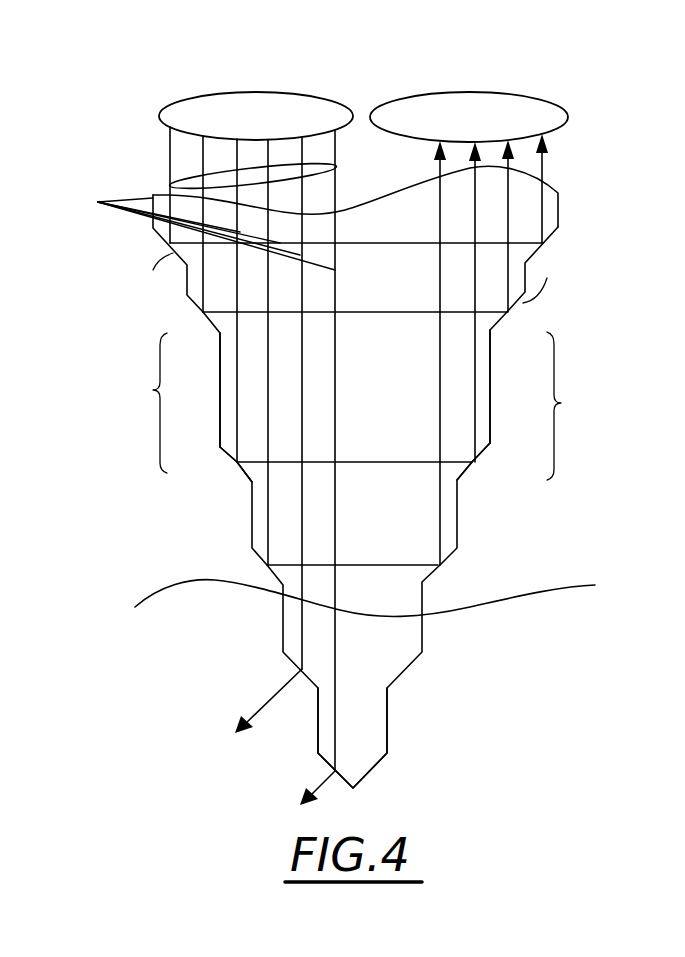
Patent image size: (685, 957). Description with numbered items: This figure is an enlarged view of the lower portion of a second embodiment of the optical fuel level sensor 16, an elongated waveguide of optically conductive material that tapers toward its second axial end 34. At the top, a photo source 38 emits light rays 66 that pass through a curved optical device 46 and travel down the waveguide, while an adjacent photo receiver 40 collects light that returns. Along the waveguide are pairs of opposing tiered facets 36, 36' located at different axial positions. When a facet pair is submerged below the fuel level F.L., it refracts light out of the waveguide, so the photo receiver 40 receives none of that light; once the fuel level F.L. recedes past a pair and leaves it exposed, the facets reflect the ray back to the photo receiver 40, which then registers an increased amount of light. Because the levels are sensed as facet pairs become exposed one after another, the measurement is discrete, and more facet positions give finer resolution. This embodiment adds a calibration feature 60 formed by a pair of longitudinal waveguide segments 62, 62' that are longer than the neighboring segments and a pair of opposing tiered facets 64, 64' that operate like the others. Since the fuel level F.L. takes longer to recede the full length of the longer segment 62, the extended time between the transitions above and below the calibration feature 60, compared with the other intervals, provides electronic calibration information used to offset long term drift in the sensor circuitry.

The optical fuel level sensor 16 is at (600, 110).
The second axial end 34 is at (412, 776).
The tiered facets 36 is at (165, 253).
The tiered facets 36' is at (561, 269).
The photo source 38 is at (257, 92).
The photo receiver 40 is at (502, 92).
The curved optical device 46 is at (190, 178).
The calibration feature 60 is at (352, 406).
The longitudinal waveguide segment 62 is at (197, 390).
The longitudinal waveguide segment 62' is at (514, 386).
The tiered facet 64 is at (221, 474).
The tiered facet 64' is at (497, 461).
The light rays 66 is at (193, 226).
The fuel level F.L. is at (520, 595).